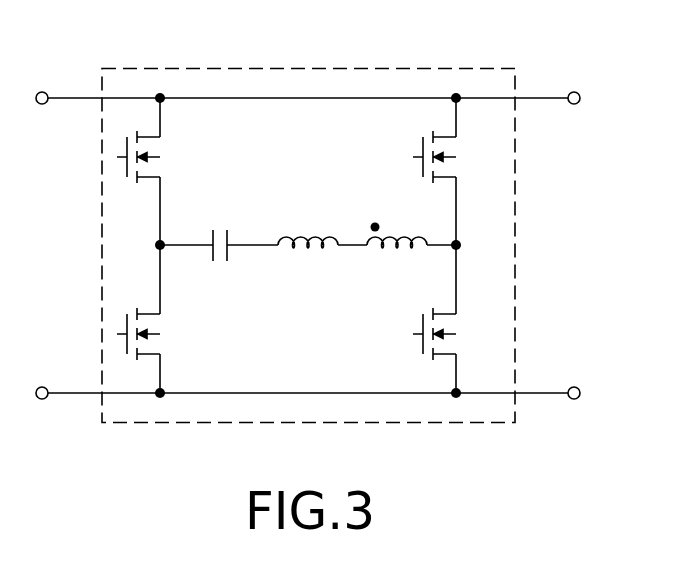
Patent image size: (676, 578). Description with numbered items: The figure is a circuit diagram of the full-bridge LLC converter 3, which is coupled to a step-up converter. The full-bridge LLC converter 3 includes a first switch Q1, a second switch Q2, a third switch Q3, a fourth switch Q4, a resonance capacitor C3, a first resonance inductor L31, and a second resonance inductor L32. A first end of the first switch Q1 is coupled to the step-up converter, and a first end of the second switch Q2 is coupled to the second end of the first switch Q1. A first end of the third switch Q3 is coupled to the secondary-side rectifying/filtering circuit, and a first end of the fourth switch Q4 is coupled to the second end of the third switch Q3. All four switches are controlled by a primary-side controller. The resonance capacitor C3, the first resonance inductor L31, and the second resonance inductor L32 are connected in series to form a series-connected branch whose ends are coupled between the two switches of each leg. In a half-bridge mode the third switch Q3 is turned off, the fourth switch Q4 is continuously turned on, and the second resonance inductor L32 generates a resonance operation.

The full-bridge LLC converter 3 is at (316, 25).
The first switch Q1 is at (158, 157).
The second switch Q2 is at (158, 334).
The third switch Q3 is at (454, 157).
The fourth switch Q4 is at (454, 334).
The resonance capacitor C3 is at (219, 228).
The first resonance inductor L31 is at (308, 221).
The second resonance inductor L32 is at (397, 221).